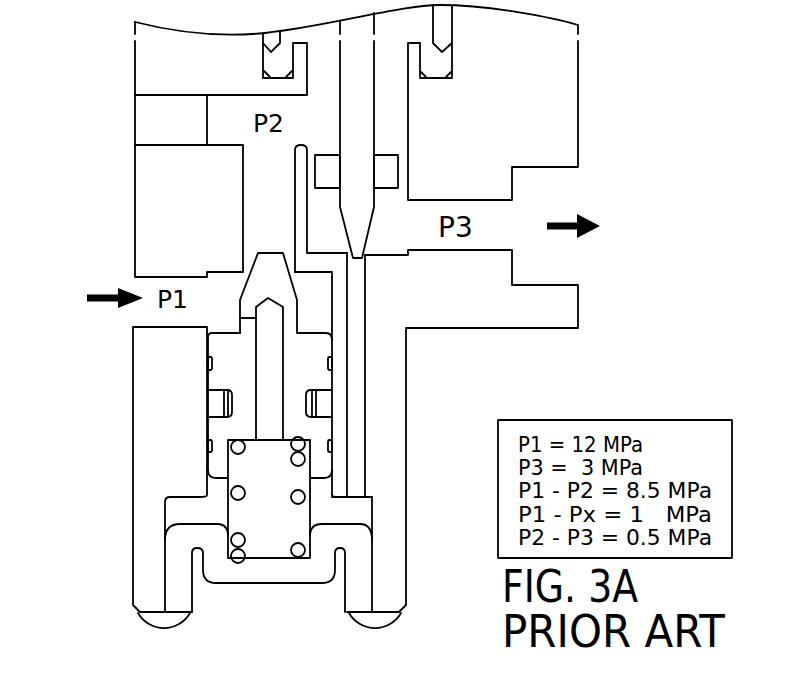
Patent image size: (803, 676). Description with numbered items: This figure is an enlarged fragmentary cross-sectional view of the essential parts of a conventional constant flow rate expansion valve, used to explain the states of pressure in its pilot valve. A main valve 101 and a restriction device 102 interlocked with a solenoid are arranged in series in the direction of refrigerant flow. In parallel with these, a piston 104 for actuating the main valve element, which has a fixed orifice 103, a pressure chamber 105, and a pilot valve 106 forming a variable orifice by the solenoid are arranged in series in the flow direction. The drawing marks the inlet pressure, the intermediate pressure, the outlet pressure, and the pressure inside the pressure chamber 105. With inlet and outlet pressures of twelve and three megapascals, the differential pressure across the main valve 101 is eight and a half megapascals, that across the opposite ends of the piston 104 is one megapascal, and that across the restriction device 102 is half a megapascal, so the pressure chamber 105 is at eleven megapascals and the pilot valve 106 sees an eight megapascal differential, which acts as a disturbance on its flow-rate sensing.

The main valve 101 is at (232, 258).
The restriction device 102 is at (407, 164).
The fixed orifice 103 is at (240, 318).
The piston 104 is at (222, 428).
The pressure chamber 105 is at (177, 512).
The pilot valve 106 is at (370, 265).